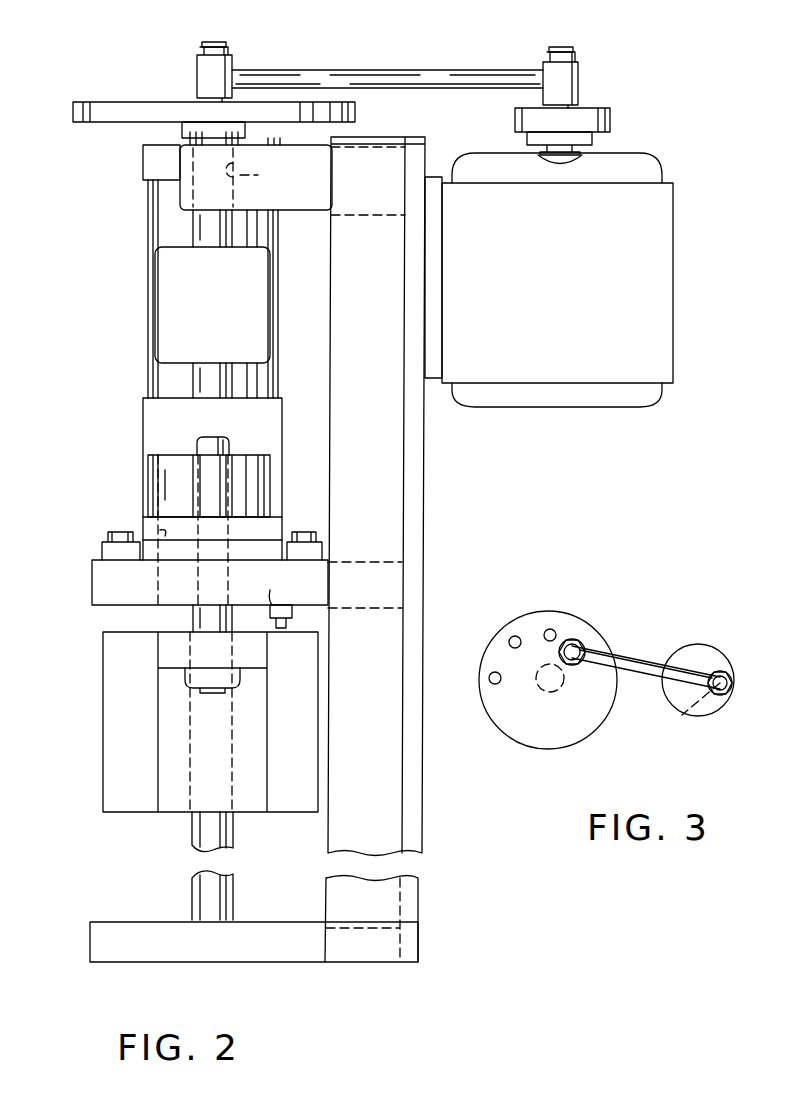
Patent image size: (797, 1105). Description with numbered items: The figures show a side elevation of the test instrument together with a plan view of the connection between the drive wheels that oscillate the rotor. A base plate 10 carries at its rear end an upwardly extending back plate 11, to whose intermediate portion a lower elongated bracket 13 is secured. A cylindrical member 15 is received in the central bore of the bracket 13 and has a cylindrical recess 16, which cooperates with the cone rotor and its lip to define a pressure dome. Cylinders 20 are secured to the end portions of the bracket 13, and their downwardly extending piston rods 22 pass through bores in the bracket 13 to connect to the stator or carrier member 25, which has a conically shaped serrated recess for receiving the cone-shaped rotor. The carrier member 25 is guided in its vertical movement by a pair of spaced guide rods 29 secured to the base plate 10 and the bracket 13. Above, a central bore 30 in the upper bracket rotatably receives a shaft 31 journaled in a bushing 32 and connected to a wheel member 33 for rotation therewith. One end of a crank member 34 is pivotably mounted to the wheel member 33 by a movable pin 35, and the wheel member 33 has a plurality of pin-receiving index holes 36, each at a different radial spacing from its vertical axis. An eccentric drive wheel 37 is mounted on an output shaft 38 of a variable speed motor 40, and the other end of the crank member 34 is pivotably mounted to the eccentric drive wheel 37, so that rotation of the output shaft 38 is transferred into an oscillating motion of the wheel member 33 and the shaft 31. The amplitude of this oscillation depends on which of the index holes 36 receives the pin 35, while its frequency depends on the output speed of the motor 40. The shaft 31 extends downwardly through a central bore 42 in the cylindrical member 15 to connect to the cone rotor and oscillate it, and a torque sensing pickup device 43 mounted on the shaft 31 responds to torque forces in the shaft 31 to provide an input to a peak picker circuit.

In FIG. 2, the base plate 10 is at (105, 942).
In FIG. 2, the back plate 11 is at (420, 505).
In FIG. 2, the lower elongated bracket 13 is at (100, 585).
In FIG. 2, the cylindrical member 15 is at (155, 412).
In FIG. 2, the cylindrical recess 16 is at (165, 532).
In FIG. 2, the cylinders 20 is at (150, 202).
In FIG. 2, the piston rods 22 is at (205, 447).
In FIG. 2, the carrier member 25 is at (110, 778).
In FIG. 2, the guide rods 29 is at (205, 840).
In FIG. 2, the central bore 30 is at (256, 177).
In FIG. 2, the shaft 31 is at (205, 228).
In FIG. 3, the shaft 31 is at (540, 692).
In FIG. 2, the bushing 32 is at (200, 130).
In FIG. 2, the wheel member 33 is at (120, 107).
In FIG. 3, the wheel member 33 is at (553, 615).
In FIG. 2, the crank member 34 is at (395, 78).
In FIG. 3, the crank member 34 is at (625, 665).
In FIG. 2, the movable pin 35 is at (207, 50).
In FIG. 3, the pin-receiving index holes 36 is at (495, 672).
In FIG. 2, the eccentric drive wheel 37 is at (575, 120).
In FIG. 3, the eccentric drive wheel 37 is at (695, 658).
In FIG. 2, the output shaft 38 is at (592, 160).
In FIG. 3, the output shaft 38 is at (680, 718).
In FIG. 2, the variable speed motor 40 is at (658, 212).
In FIG. 2, the central bore 42 is at (150, 165).
In FIG. 2, the torque sensing pickup device 43 is at (165, 318).